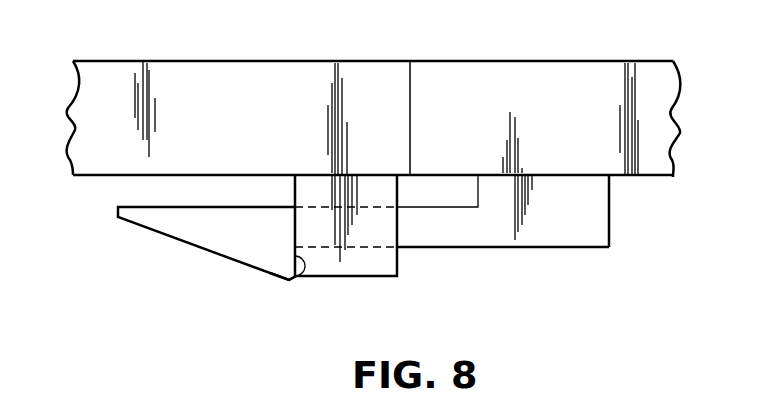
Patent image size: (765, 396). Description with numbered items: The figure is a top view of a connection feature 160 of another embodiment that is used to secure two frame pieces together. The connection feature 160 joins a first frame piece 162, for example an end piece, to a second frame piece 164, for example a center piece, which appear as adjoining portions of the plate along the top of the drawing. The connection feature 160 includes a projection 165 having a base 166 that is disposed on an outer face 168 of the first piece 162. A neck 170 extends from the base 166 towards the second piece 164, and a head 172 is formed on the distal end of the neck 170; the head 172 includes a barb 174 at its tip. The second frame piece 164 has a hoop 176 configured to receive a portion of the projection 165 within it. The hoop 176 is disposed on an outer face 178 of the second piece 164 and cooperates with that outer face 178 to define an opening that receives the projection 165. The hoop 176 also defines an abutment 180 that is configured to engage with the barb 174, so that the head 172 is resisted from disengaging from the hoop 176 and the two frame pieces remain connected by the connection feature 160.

The connection feature 160 is at (458, 282).
The first frame piece 162 is at (540, 88).
The second frame piece 164 is at (236, 88).
The projection 165 is at (463, 228).
The base 166 is at (585, 212).
The outer face 168 is at (645, 178).
The neck 170 is at (422, 227).
The head 172 is at (222, 227).
The barb 174 is at (295, 265).
The hoop 176 is at (370, 260).
The outer face 178 is at (107, 178).
The abutment 180 is at (303, 278).